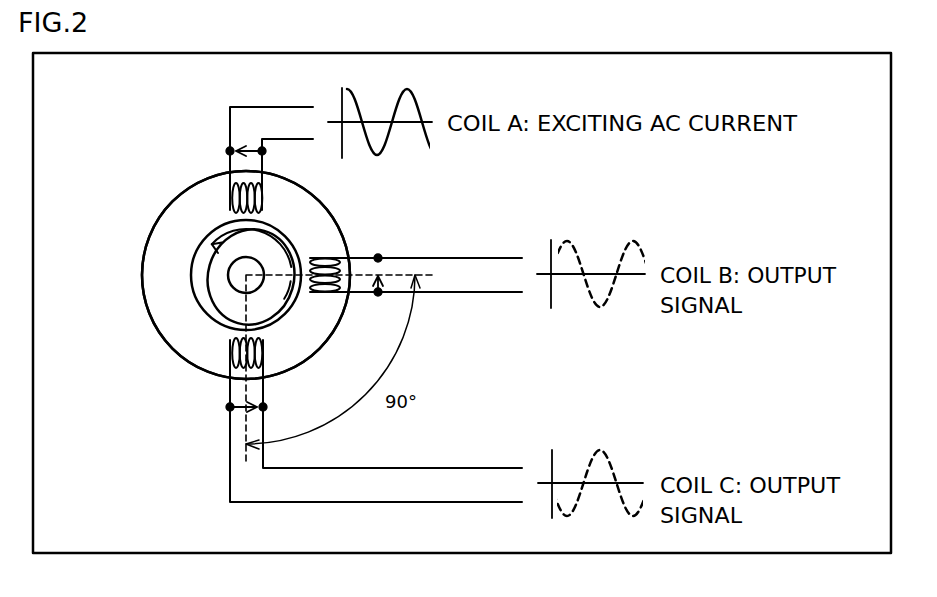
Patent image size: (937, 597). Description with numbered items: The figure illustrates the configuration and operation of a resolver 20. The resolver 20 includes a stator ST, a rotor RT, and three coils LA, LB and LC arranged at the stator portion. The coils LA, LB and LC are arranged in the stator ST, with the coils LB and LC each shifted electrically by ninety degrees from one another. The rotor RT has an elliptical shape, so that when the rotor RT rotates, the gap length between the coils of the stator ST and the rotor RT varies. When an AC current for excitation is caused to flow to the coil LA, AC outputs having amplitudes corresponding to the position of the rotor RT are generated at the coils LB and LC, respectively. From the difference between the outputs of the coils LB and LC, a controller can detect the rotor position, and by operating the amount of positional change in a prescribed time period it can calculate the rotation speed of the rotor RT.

The resolver 20 is at (119, 111).
The stator ST is at (162, 256).
The rotor RT is at (215, 285).
The coil LA is at (230, 208).
The coil LB is at (317, 257).
The coil LC is at (230, 348).